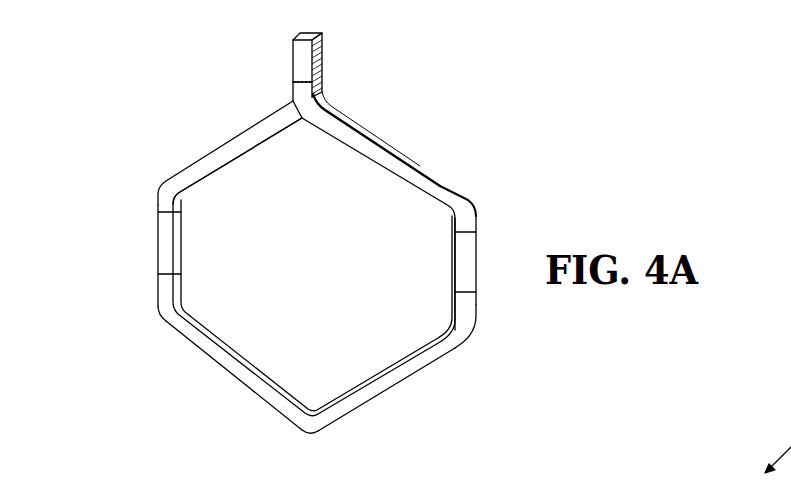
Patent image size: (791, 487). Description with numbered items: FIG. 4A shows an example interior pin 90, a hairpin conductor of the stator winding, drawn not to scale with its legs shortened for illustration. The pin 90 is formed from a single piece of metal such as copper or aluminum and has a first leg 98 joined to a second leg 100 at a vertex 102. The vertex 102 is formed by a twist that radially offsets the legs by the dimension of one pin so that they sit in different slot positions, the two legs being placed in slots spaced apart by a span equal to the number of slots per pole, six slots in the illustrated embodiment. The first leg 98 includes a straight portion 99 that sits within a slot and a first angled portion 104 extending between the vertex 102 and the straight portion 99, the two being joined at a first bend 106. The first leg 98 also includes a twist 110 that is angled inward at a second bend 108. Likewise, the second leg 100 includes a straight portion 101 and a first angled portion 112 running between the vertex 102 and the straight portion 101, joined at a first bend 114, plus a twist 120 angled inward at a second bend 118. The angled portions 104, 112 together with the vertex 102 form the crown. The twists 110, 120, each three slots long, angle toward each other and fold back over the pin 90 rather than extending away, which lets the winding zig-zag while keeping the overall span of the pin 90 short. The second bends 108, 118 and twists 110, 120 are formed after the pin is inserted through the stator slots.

The interior pin 90 is at (492, 61).
The first leg 98 is at (463, 270).
The straight portion 99 is at (477, 252).
The second leg 100 is at (167, 242).
The straight portion 101 is at (183, 247).
The vertex 102 is at (310, 438).
The first angled portion 104 is at (393, 378).
The first bend 106 is at (460, 330).
The second bend 108 is at (457, 200).
The twist 110 is at (355, 142).
The first angled portion 112 is at (228, 371).
The first bend 114 is at (170, 307).
The second bend 118 is at (162, 187).
The twist 120 is at (238, 142).